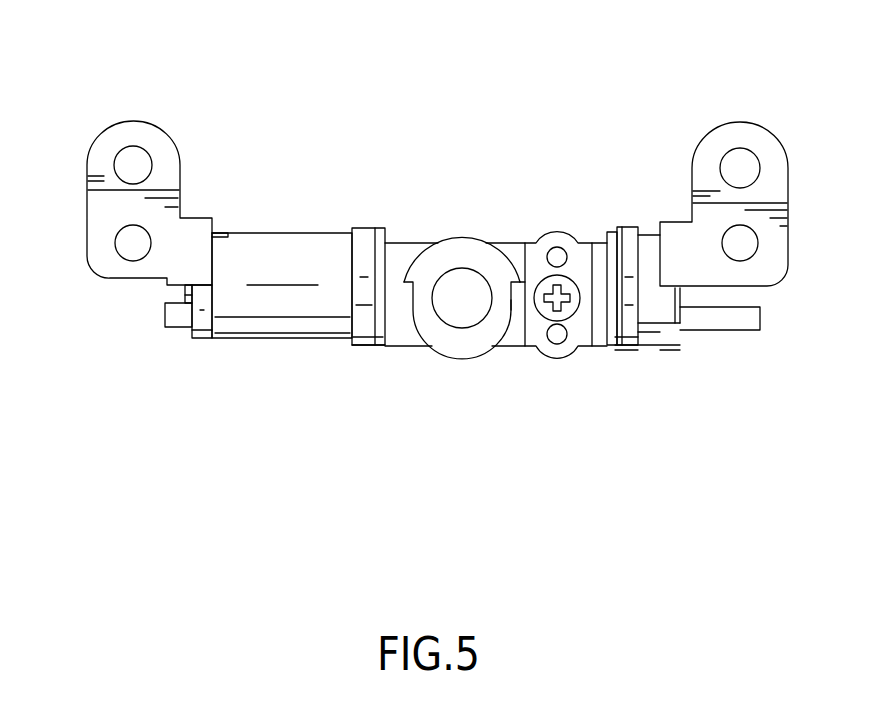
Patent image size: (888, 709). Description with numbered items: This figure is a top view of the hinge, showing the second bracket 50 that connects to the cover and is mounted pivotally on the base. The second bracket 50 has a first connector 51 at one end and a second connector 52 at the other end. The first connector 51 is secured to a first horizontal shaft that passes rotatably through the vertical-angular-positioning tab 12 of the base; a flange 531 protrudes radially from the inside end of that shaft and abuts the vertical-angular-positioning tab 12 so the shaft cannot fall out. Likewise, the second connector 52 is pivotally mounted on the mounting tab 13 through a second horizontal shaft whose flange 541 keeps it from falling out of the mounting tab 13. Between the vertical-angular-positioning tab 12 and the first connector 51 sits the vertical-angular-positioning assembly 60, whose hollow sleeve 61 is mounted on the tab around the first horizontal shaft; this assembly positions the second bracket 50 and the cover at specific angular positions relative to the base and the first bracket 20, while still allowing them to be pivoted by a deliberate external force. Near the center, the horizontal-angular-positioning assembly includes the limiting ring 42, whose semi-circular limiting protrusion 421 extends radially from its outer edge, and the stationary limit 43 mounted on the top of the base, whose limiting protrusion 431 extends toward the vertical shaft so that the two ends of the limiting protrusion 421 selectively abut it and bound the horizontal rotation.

The second bracket 50 is at (130, 97).
The first connector 51 is at (95, 198).
The second connector 52 is at (788, 203).
The vertical-angular-positioning assembly 60 is at (283, 181).
The sleeve 61 is at (293, 238).
The flange 531 is at (383, 237).
The flange 541 is at (612, 228).
The vertical-angular-positioning tab 12 is at (358, 337).
The mounting tab 13 is at (627, 347).
The limiting ring 42 is at (442, 335).
The limiting protrusion 421 is at (463, 245).
The limiting protrusion 431 is at (517, 313).
The stationary limit 43 is at (557, 350).
The first bracket 20 is at (730, 323).